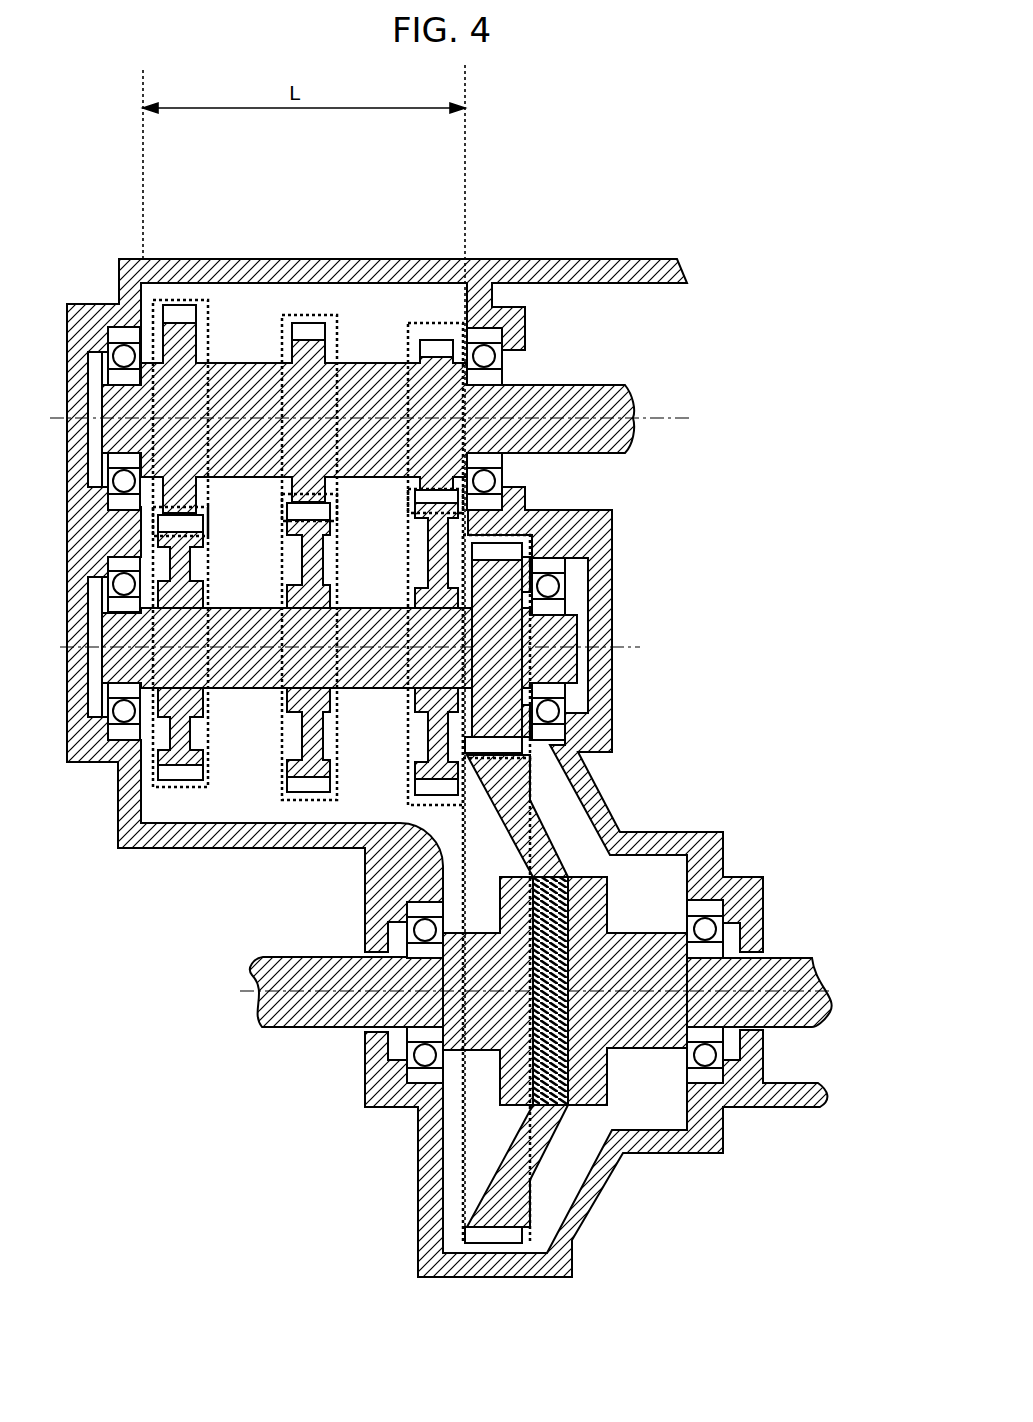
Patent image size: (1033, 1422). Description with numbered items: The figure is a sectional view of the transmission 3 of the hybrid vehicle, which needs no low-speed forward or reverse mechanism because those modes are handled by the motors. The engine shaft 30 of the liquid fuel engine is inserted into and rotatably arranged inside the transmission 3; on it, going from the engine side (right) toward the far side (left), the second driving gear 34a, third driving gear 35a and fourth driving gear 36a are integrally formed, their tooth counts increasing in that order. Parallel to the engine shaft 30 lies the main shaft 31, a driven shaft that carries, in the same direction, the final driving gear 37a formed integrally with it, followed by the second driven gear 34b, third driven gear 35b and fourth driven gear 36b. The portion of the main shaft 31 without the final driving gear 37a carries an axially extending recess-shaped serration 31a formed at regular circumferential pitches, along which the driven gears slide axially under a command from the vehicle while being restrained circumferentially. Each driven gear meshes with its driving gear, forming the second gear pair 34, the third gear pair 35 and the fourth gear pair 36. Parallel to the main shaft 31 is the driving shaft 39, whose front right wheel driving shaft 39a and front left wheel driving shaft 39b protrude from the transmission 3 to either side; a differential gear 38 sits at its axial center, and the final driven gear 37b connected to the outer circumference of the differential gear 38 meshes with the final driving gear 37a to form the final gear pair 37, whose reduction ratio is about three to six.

The transmission 3 is at (721, 184).
The engine shaft 30 is at (605, 413).
The main shaft 31 is at (553, 645).
The recess-shaped serration 31a is at (228, 693).
The second gear pair 34 is at (408, 322).
The second driving gear 34a is at (446, 347).
The second driven gear 34b is at (395, 787).
The third gear pair 35 is at (287, 315).
The third driving gear 35a is at (313, 322).
The third driven gear 35b is at (270, 782).
The fourth gear pair 36 is at (180, 312).
The fourth driving gear 36a is at (207, 295).
The fourth driven gear 36b is at (178, 763).
The final gear pair 37 is at (533, 778).
The final driving gear 37a is at (500, 557).
The final driven gear 37b is at (497, 1232).
The differential gear 38 is at (683, 933).
The driving shaft 39 is at (507, 1028).
The front right wheel driving shaft 39a is at (787, 983).
The front left wheel driving shaft 39b is at (335, 1000).